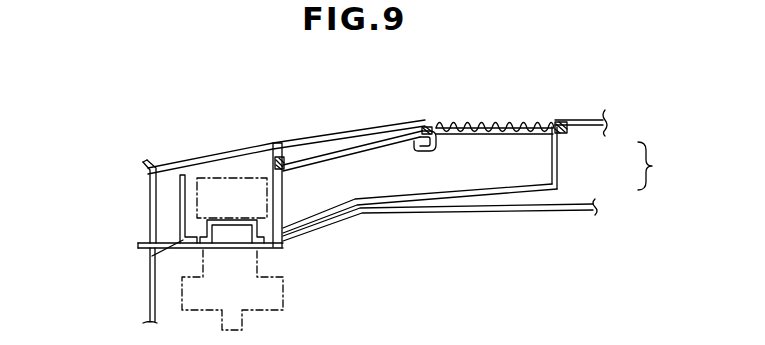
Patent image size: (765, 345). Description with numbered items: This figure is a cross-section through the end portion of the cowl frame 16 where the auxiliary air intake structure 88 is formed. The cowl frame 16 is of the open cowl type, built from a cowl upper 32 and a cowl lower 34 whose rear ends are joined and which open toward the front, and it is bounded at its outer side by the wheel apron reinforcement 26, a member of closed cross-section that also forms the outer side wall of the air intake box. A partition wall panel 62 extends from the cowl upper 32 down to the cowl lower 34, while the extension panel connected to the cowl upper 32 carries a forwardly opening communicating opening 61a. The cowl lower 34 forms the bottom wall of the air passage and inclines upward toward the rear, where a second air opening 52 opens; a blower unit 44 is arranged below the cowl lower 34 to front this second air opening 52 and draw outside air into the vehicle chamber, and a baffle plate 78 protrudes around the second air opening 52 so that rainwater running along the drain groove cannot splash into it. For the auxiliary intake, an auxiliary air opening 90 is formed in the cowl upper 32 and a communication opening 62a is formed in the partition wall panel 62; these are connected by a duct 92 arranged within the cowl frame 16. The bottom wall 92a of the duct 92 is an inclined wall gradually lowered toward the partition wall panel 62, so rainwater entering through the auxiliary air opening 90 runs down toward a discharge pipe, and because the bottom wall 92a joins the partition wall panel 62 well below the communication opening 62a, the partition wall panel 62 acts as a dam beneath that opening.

The cowl frame 16 is at (659, 166).
The wheel apron reinforcement 26 is at (148, 204).
The cowl upper 32 is at (592, 127).
The cowl lower 34 is at (580, 209).
The blower unit 44 is at (285, 288).
The second air opening 52 is at (227, 248).
The communicating opening 61a is at (216, 178).
The partition wall panel 62 is at (274, 156).
The communication opening 62a is at (286, 170).
The baffle plate 78 is at (157, 253).
The auxiliary air intake structure 88 is at (490, 102).
The auxiliary air opening 90 is at (526, 133).
The duct 92 is at (384, 141).
The bottom wall of the duct 92a is at (492, 186).